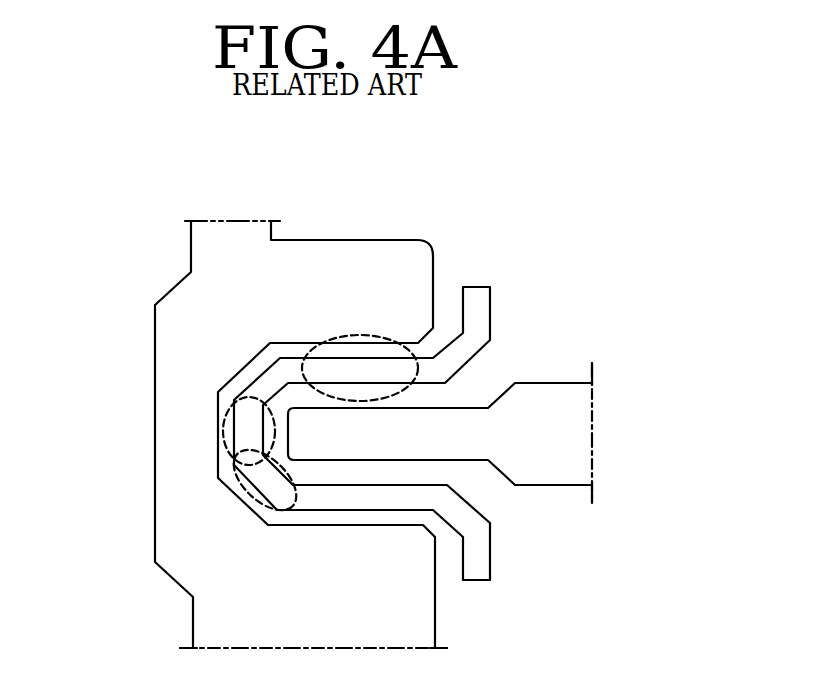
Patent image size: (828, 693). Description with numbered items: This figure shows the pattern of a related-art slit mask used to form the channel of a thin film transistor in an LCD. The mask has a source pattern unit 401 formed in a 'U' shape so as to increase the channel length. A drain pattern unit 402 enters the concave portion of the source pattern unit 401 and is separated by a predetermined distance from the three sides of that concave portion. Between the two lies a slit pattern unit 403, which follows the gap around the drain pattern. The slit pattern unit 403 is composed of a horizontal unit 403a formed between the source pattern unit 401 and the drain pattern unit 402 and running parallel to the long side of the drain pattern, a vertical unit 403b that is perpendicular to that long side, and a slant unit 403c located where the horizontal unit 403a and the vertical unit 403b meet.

The source pattern unit 401 is at (379, 250).
The drain pattern unit 402 is at (583, 429).
The slit pattern unit 403 is at (480, 305).
The horizontal unit 403a is at (367, 335).
The vertical unit 403b is at (223, 440).
The slant unit 403c is at (250, 498).